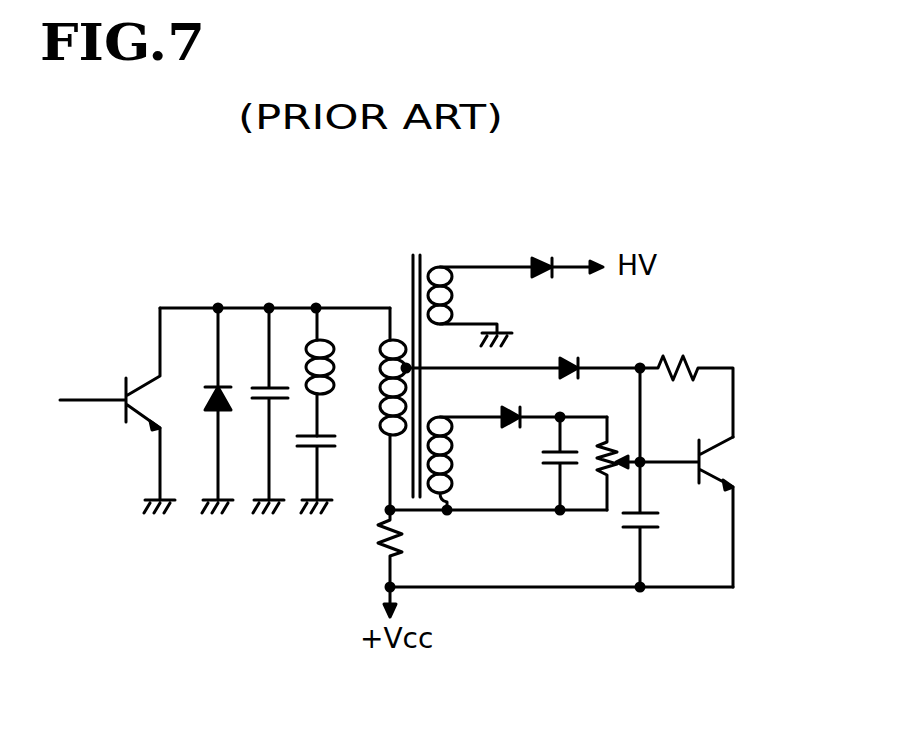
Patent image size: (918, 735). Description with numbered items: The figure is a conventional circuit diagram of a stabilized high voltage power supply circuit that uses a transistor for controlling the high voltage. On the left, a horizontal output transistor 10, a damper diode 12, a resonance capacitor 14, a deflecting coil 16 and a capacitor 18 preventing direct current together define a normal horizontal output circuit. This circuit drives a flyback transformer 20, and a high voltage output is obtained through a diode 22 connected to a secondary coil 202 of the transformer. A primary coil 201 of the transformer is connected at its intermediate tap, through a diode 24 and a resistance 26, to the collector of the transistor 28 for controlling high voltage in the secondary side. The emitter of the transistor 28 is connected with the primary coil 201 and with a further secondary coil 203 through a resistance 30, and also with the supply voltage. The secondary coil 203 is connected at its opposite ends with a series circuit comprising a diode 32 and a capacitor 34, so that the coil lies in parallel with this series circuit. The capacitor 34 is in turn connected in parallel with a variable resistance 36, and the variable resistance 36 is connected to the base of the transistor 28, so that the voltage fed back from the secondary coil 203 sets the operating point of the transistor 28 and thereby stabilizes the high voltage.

The horizontal output transistor 10 is at (110, 412).
The damper diode 12 is at (197, 408).
The resonance capacitor 14 is at (253, 408).
The deflecting coil 16 is at (345, 380).
The capacitor preventing direct current 18 is at (343, 449).
The flyback transformer 20 is at (422, 247).
The primary coil 201 is at (387, 425).
The secondary coil 202 is at (455, 297).
The secondary coil 203 is at (462, 448).
The diode 22 is at (556, 256).
The diode 24 is at (566, 355).
The resistance 26 is at (676, 352).
The transistor for controlling high voltage 28 is at (725, 457).
The resistance 30 is at (400, 545).
The diode 32 is at (492, 408).
The capacitor 34 is at (546, 475).
The variable resistance 36 is at (616, 440).